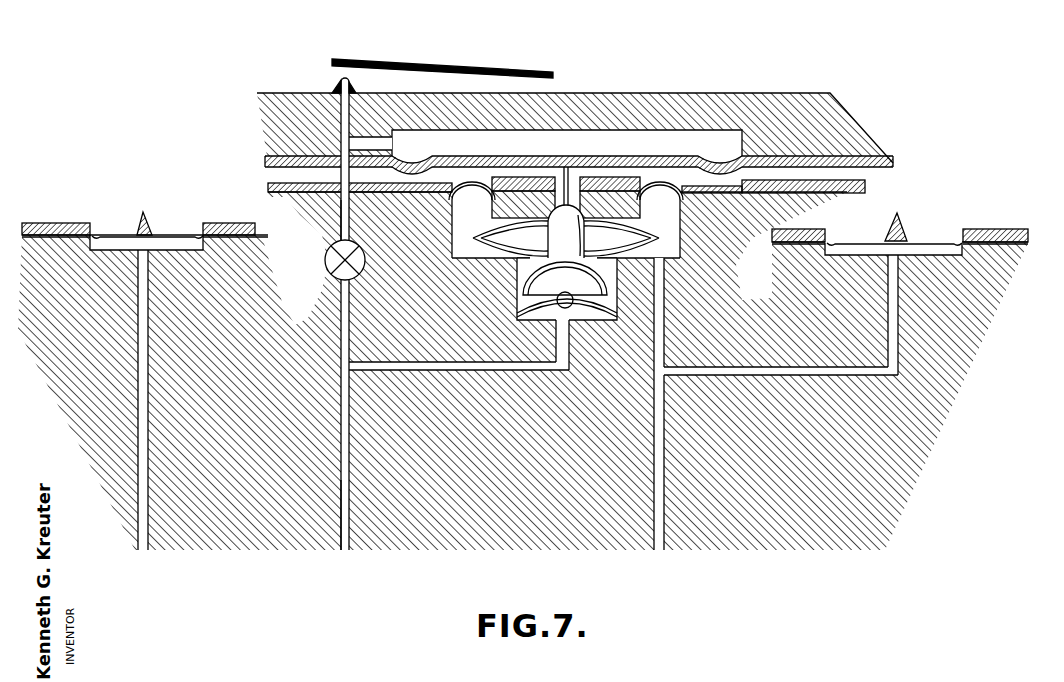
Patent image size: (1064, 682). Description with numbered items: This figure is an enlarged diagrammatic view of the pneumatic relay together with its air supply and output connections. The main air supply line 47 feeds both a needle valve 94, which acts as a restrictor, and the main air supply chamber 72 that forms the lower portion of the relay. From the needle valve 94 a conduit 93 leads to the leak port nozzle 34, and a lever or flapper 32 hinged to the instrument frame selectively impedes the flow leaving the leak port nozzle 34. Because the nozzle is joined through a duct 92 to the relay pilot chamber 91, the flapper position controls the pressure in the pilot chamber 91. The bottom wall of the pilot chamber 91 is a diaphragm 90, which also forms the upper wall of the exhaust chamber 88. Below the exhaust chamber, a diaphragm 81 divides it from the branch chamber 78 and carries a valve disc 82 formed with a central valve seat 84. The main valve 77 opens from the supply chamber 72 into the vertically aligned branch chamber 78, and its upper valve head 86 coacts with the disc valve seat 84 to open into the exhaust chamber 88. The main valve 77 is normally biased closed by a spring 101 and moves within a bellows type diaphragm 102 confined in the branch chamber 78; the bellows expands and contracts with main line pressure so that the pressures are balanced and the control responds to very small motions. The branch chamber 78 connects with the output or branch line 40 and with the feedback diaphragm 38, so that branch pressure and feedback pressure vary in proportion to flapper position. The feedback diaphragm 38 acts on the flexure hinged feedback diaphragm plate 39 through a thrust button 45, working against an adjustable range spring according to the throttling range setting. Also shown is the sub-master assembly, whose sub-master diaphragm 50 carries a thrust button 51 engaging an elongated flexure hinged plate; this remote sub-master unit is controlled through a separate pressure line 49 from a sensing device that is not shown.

The flapper 32 is at (485, 64).
The leak port nozzle 34 is at (340, 84).
The feedback diaphragm 38 is at (830, 231).
The feedback diaphragm plate 39 is at (921, 234).
The branch line 40 is at (658, 552).
The thrust button 45 is at (888, 226).
The main air supply line 47 is at (345, 552).
The pressure line 49 is at (138, 520).
The sub-master diaphragm 50 is at (102, 230).
The thrust button 51 is at (139, 218).
The main air supply chamber 72 is at (571, 333).
The main valve 77 is at (521, 289).
The branch chamber 78 is at (664, 230).
The diaphragm 81 is at (473, 183).
The valve disc 82 is at (530, 214).
The central valve seat 84 is at (556, 200).
The upper valve head 86 is at (565, 205).
The exhaust chamber 88 is at (668, 181).
The diaphragm 90 is at (746, 158).
The relay pilot chamber 91 is at (642, 140).
The duct 92 is at (368, 137).
The conduit 93 is at (340, 232).
The needle valve 94 is at (327, 260).
The spring 101 is at (537, 324).
The bellows type diaphragm 102 is at (468, 233).